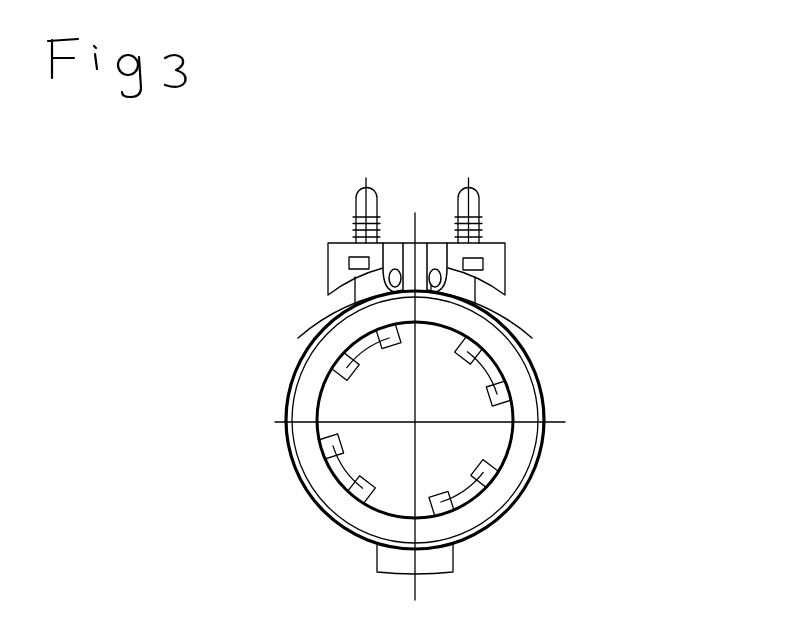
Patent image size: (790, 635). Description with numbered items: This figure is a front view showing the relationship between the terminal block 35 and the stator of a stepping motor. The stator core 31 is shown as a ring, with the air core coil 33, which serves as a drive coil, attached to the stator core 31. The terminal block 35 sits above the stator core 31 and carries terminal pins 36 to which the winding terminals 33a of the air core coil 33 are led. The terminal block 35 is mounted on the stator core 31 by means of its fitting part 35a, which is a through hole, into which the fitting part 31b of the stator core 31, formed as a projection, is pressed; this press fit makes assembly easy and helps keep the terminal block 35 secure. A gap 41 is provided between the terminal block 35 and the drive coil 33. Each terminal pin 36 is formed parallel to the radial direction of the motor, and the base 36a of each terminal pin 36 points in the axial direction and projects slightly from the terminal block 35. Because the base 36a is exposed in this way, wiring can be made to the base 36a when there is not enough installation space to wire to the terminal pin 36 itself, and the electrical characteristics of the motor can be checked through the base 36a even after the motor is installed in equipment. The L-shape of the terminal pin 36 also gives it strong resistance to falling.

The stator core 31 is at (533, 402).
The fitting part 31b is at (407, 235).
The air core coil 33 is at (533, 483).
The winding terminal 33a is at (327, 321).
The terminal block 35 is at (500, 279).
The fitting part 35a is at (440, 232).
The terminal pin 36 is at (357, 190).
The base 36a is at (349, 263).
The gap 41 is at (311, 312).